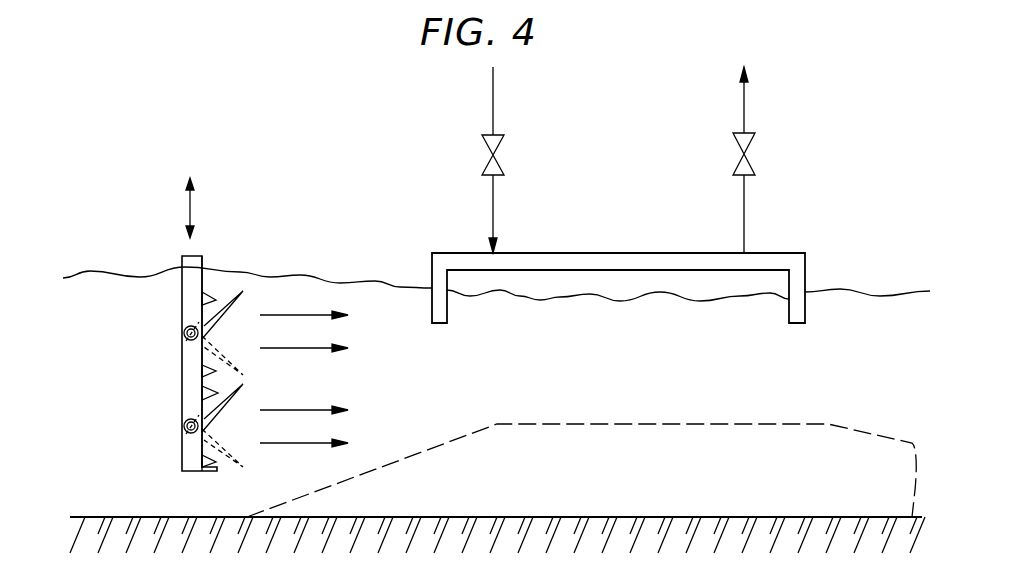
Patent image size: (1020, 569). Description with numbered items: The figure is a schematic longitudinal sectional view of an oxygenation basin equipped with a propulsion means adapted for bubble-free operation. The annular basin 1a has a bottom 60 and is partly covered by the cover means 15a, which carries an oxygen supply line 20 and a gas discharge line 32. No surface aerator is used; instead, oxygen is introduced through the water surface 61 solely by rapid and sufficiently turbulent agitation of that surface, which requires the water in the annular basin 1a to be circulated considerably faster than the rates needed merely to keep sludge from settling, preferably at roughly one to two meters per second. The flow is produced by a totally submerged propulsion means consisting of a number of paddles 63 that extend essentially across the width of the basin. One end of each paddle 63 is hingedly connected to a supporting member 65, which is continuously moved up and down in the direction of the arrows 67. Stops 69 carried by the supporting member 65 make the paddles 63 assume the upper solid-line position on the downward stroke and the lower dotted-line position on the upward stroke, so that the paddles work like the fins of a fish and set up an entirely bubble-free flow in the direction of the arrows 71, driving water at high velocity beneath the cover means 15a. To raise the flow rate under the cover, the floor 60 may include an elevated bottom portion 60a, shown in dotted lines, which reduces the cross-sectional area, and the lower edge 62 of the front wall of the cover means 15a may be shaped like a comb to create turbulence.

The annular basin 1a is at (125, 508).
The bottom of the annular basin 60 is at (198, 516).
The elevated bottom portion 60a is at (625, 423).
The arrows indicating flow direction 71 is at (292, 314).
The supporting member 65 is at (172, 306).
The paddles 63 is at (241, 294).
The stops 69 is at (207, 292).
The arrows indicating up-and-down movement 67 is at (189, 210).
The cover means 15a is at (620, 260).
The water surface 61 is at (548, 300).
The lower edge of the front wall of the cover 62 is at (796, 325).
The oxygen supply line 20 is at (494, 120).
The gas discharge line 32 is at (745, 199).